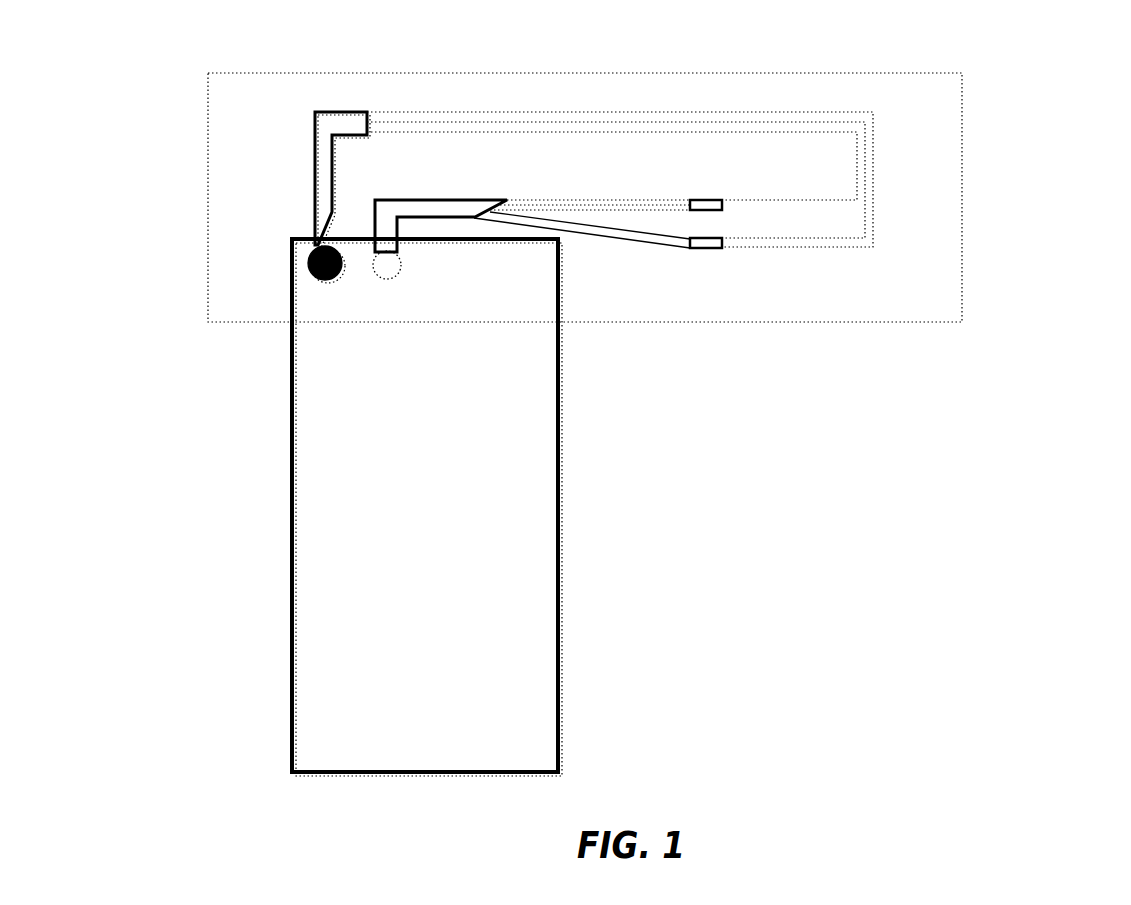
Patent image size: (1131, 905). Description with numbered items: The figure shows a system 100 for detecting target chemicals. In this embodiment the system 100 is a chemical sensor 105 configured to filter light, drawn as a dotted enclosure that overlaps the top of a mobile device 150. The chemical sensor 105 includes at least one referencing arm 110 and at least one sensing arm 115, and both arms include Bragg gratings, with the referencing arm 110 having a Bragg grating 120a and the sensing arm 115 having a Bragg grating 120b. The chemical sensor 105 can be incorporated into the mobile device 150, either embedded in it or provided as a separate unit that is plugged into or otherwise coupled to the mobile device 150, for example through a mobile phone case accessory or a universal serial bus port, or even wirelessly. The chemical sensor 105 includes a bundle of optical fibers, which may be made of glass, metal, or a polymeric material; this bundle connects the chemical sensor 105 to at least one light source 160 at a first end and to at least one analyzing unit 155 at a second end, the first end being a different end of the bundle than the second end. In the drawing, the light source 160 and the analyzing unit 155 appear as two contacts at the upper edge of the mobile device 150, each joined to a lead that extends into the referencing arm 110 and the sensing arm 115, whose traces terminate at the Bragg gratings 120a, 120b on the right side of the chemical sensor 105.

The system 100 is at (1042, 137).
The chemical sensor 105 is at (207, 139).
The referencing arm 110 is at (620, 240).
The sensing arm 115 is at (581, 199).
The Bragg grating 120a is at (718, 254).
The Bragg grating 120b is at (719, 192).
The mobile device 150 is at (561, 563).
The analyzing unit 155 is at (324, 289).
The light source 160 is at (387, 284).